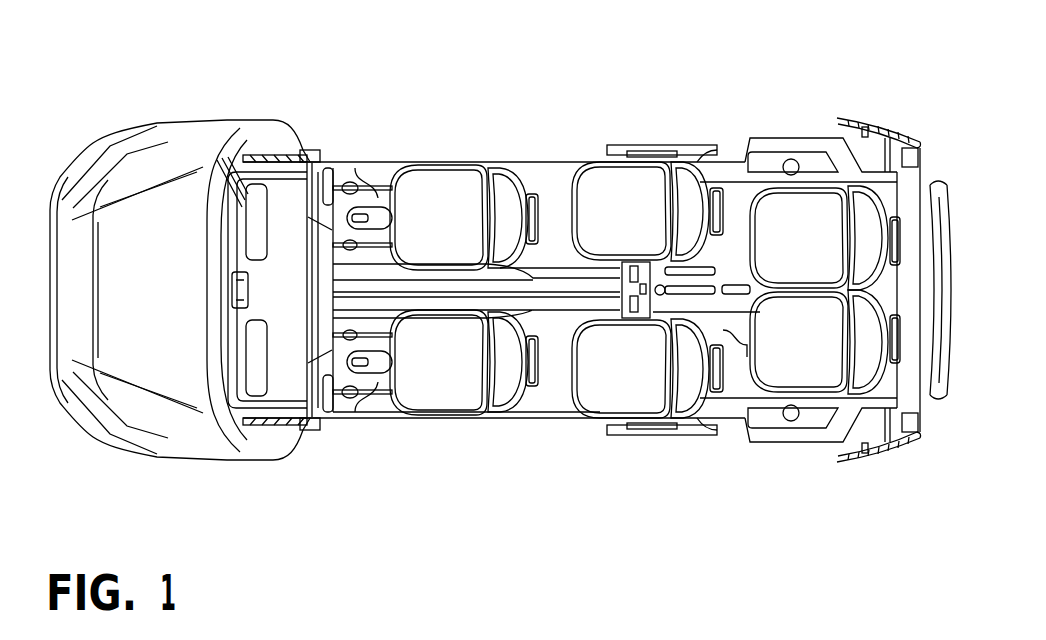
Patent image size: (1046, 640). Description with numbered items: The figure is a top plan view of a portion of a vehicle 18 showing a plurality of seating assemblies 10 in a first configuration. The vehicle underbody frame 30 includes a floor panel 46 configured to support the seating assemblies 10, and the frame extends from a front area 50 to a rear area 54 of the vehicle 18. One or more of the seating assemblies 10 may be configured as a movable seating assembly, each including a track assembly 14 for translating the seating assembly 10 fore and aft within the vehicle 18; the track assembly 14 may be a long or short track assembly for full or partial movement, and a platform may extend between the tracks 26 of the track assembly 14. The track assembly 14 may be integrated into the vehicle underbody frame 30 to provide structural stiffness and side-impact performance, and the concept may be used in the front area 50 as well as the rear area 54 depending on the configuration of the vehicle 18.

The vehicle seating assembly 10 is at (437, 195).
The track assembly 14 is at (375, 176).
The vehicle 18 is at (821, 85).
The tracks 26 is at (350, 182).
The vehicle underbody frame 30 is at (363, 413).
The floor panel 46 is at (553, 397).
The front area 50 is at (296, 191).
The rear area 54 is at (736, 405).